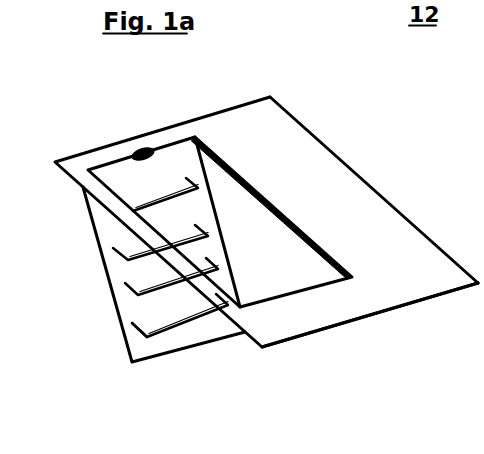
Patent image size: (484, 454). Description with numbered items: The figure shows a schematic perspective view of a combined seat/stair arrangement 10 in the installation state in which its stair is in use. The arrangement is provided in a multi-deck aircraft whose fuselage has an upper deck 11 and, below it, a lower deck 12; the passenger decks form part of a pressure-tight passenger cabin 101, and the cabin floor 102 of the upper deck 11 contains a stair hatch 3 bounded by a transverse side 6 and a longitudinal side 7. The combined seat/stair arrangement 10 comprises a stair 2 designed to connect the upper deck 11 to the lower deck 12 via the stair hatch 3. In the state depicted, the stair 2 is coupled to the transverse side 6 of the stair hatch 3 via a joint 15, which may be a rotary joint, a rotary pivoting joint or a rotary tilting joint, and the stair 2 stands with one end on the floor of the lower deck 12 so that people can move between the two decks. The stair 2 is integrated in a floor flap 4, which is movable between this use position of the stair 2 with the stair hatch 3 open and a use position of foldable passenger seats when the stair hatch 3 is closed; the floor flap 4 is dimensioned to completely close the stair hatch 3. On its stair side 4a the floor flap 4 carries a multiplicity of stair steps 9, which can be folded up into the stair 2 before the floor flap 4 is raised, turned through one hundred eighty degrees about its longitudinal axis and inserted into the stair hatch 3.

The combined seat/stair arrangement 10 is at (63, 129).
The upper deck 11 is at (417, 280).
The passenger cabin 101 is at (423, 160).
The cabin floor 102 is at (275, 112).
The lower deck 12 is at (274, 248).
The longitudinal side 7 is at (322, 242).
The stair hatch 3 is at (278, 268).
The stair 2 is at (117, 172).
The joint 15 is at (143, 147).
The transverse side 6 is at (182, 137).
The floor flap 4 is at (96, 253).
The stair side 4a is at (200, 332).
The stair step 9 is at (159, 348).